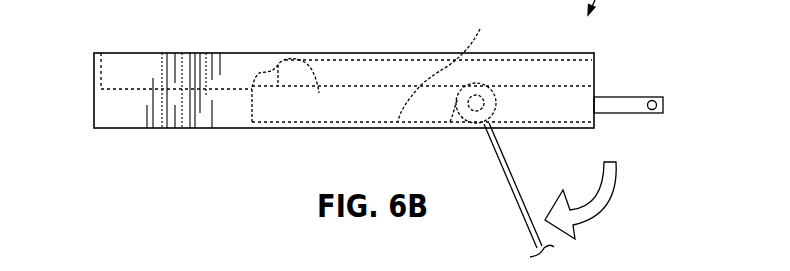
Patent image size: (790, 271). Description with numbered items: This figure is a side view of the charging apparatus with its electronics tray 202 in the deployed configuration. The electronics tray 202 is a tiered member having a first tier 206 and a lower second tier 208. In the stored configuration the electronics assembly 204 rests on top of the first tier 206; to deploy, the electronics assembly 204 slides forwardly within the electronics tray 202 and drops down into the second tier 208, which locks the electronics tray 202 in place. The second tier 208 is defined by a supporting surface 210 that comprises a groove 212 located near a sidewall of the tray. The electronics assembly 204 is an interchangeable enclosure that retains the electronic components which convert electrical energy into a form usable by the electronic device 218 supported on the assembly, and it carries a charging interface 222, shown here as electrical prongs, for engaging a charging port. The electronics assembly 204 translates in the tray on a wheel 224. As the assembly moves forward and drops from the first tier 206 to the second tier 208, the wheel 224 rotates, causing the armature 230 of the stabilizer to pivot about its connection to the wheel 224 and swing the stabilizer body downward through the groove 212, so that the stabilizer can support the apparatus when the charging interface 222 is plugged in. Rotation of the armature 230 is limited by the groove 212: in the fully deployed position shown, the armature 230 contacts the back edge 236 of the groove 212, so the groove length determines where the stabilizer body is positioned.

The electronics tray 202 is at (108, 110).
The electronics assembly 204 is at (294, 58).
The first tier 206 is at (133, 96).
The second tier 208 is at (278, 137).
The supporting surface 210 is at (447, 67).
The groove 212 is at (571, 128).
The electronic device 218 is at (361, 68).
The charging interface 222 is at (638, 88).
The wheel 224 is at (450, 122).
The armature 230 is at (528, 229).
The back edge 236 is at (487, 126).